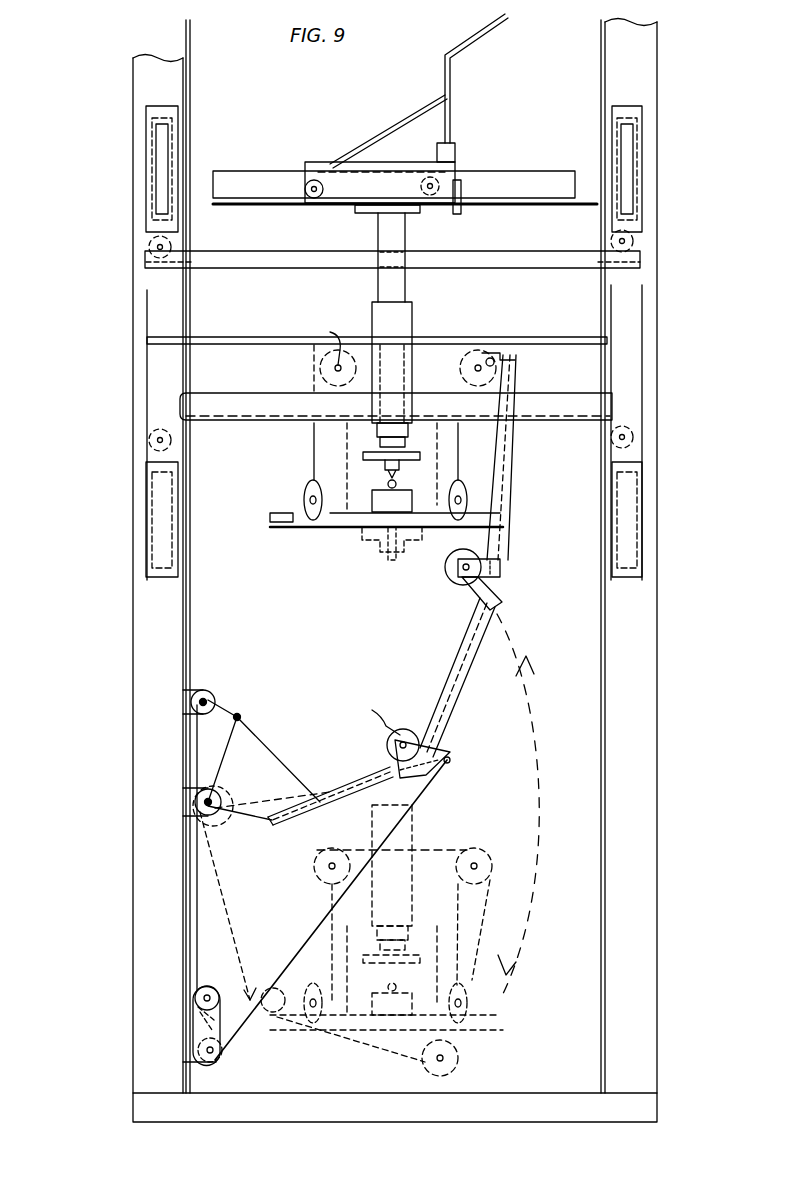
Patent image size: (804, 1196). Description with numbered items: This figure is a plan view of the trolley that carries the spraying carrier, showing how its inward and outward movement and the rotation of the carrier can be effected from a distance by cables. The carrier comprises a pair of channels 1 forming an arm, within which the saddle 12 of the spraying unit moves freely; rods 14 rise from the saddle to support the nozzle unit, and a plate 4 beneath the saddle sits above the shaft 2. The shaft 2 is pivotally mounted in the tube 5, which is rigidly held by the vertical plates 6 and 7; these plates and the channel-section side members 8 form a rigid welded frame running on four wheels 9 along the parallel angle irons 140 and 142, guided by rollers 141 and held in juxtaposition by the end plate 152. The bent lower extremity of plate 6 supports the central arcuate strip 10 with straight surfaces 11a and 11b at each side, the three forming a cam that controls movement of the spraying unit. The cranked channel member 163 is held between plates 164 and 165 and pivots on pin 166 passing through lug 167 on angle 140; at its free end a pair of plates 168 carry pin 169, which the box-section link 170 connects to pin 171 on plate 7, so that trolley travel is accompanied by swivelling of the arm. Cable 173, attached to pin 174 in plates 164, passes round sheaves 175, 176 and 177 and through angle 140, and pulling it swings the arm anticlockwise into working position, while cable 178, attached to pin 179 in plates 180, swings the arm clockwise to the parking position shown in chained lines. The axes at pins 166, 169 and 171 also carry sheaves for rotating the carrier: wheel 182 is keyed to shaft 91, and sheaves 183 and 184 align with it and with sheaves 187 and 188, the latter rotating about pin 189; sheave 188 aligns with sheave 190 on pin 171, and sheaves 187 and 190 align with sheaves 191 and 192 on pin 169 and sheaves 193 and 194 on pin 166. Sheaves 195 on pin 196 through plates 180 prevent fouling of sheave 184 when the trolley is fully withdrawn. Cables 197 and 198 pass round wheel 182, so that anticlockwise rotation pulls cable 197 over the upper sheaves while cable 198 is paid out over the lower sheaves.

The channels 1 is at (497, 178).
The shaft 2 is at (405, 233).
The plate 4 is at (362, 211).
The tube 5 is at (403, 318).
The vertical plate 6 is at (214, 340).
The vertical plate 7 is at (230, 420).
The side members 8 is at (150, 325).
The wheels 9 is at (156, 187).
The central arcuate strip 10 is at (428, 266).
The straight surface 11a is at (572, 262).
The straight surface 11b is at (195, 268).
The saddle 12 is at (323, 168).
The rods 14 is at (450, 106).
The shaft 91 is at (392, 556).
The angle iron 140 is at (146, 90).
The rollers 141 is at (150, 247).
The angle iron 142 is at (640, 82).
The end plate 152 is at (265, 1110).
The cranked channel member 163 is at (457, 686).
The plate 164 is at (268, 764).
The plate 165 is at (292, 748).
The pin 166 is at (220, 812).
The lug 167 is at (196, 792).
The plates 168 is at (498, 594).
The pin 169 is at (455, 597).
The box-section link 170 is at (512, 470).
The pin 171 is at (494, 358).
The cable 173 is at (224, 700).
The pin 174 is at (244, 716).
The sheave 175 is at (207, 692).
The sheave 176 is at (198, 990).
The sheave 177 is at (216, 1064).
The cable 178 is at (424, 788).
The pin 179 is at (454, 764).
The plates 180 is at (445, 752).
The wheel 182 is at (360, 530).
The sheave 183 is at (452, 492).
The sheave 184 is at (306, 496).
The sheave 187 is at (487, 340).
The sheave 188 is at (322, 372).
The pin 189 is at (320, 339).
The sheave 190 is at (480, 320).
The sheave 191 is at (460, 575).
The sheave 192 is at (437, 590).
The sheave 193 is at (200, 812).
The sheave 194 is at (122, 831).
The sheaves 195 is at (262, 989).
The pin 196 is at (404, 734).
The cable 197 is at (190, 80).
The cable 198 is at (218, 68).